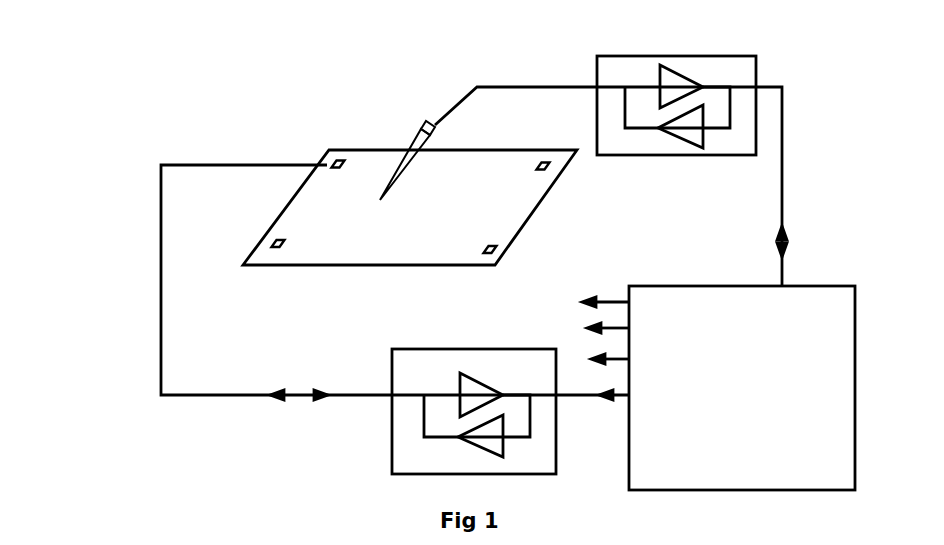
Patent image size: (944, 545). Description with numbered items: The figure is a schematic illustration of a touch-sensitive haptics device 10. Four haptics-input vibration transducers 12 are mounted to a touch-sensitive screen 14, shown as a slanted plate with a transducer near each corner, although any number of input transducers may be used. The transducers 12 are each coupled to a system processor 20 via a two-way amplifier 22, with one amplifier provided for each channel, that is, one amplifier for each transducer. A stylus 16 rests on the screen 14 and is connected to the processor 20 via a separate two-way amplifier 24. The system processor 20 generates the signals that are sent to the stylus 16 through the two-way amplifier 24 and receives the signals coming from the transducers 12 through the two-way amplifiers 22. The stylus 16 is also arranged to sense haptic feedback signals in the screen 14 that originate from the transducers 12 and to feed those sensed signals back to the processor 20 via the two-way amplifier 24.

The touch-sensitive haptics device 10 is at (122, 134).
The haptics-input vibration transducers 12 is at (345, 152).
The touch-sensitive screen 14 is at (335, 245).
The stylus 16 is at (420, 123).
The system processor 20 is at (742, 388).
The two-way amplifier 22 is at (423, 468).
The two-way amplifier 24 is at (657, 72).